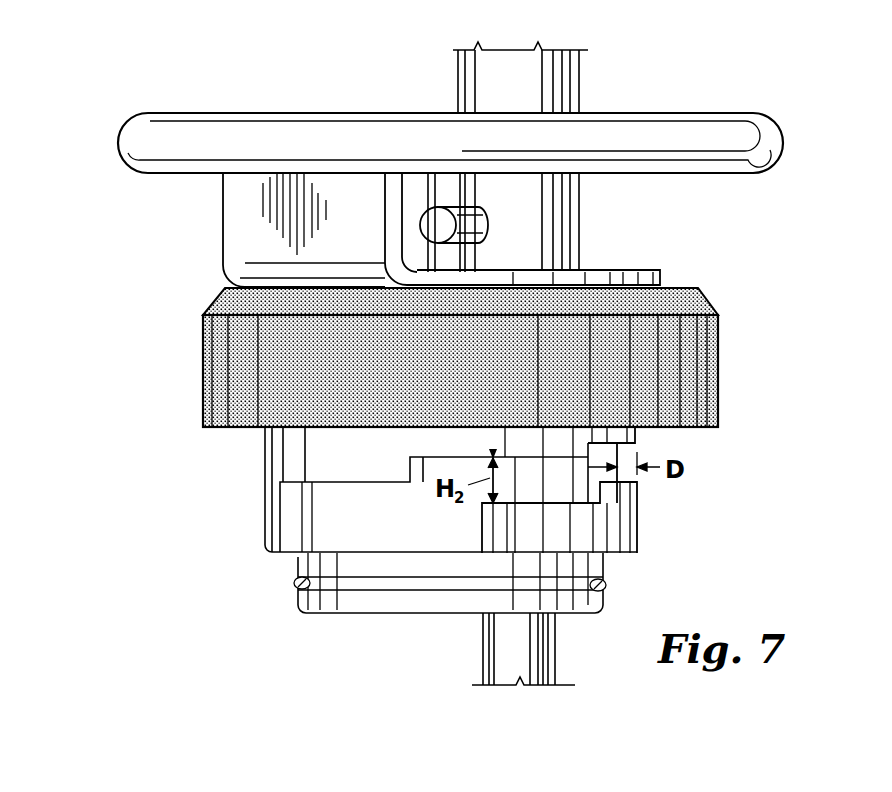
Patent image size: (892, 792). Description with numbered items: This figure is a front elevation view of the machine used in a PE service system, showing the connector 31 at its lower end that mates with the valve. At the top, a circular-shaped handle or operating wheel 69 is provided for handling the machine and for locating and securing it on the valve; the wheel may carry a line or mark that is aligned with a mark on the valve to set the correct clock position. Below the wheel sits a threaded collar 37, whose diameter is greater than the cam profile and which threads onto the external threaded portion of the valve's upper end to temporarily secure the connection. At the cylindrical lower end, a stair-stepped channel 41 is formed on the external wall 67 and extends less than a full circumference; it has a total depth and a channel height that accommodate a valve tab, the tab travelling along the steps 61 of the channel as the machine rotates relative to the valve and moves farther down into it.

The connector 31 is at (245, 515).
The threaded collar 37 is at (202, 397).
The stair-stepped channel 41 is at (400, 518).
The step 61 is at (637, 535).
The external wall 67 is at (325, 522).
The handle or operating wheel 69 is at (142, 158).